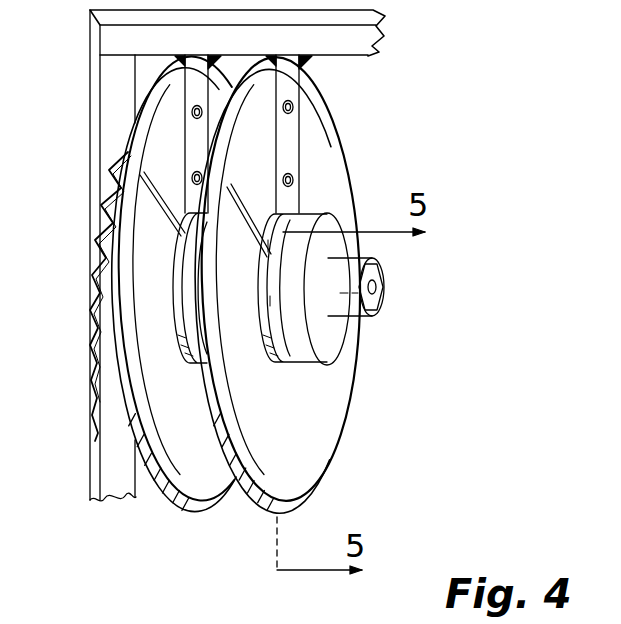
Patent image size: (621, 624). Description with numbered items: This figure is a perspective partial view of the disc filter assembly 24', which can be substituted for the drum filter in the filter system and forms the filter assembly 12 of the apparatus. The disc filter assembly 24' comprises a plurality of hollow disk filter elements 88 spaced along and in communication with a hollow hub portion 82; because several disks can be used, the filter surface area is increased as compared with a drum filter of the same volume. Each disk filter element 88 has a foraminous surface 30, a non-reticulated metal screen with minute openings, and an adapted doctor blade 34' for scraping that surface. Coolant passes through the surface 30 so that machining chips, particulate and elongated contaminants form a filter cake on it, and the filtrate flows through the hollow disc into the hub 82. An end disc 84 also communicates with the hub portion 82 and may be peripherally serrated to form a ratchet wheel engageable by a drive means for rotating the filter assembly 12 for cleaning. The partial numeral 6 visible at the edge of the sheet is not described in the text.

The filter assembly 12 is at (77, 145).
The end disc 84 is at (110, 322).
The partial numeral (16) 6 is at (7, 340).
The disc filter assembly 24' is at (310, 285).
The foraminous surface 30 is at (310, 422).
The doctor blade 34' is at (224, 156).
The hollow hub portion 82 is at (380, 284).
The hollow disk filter element 88 is at (537, 233).